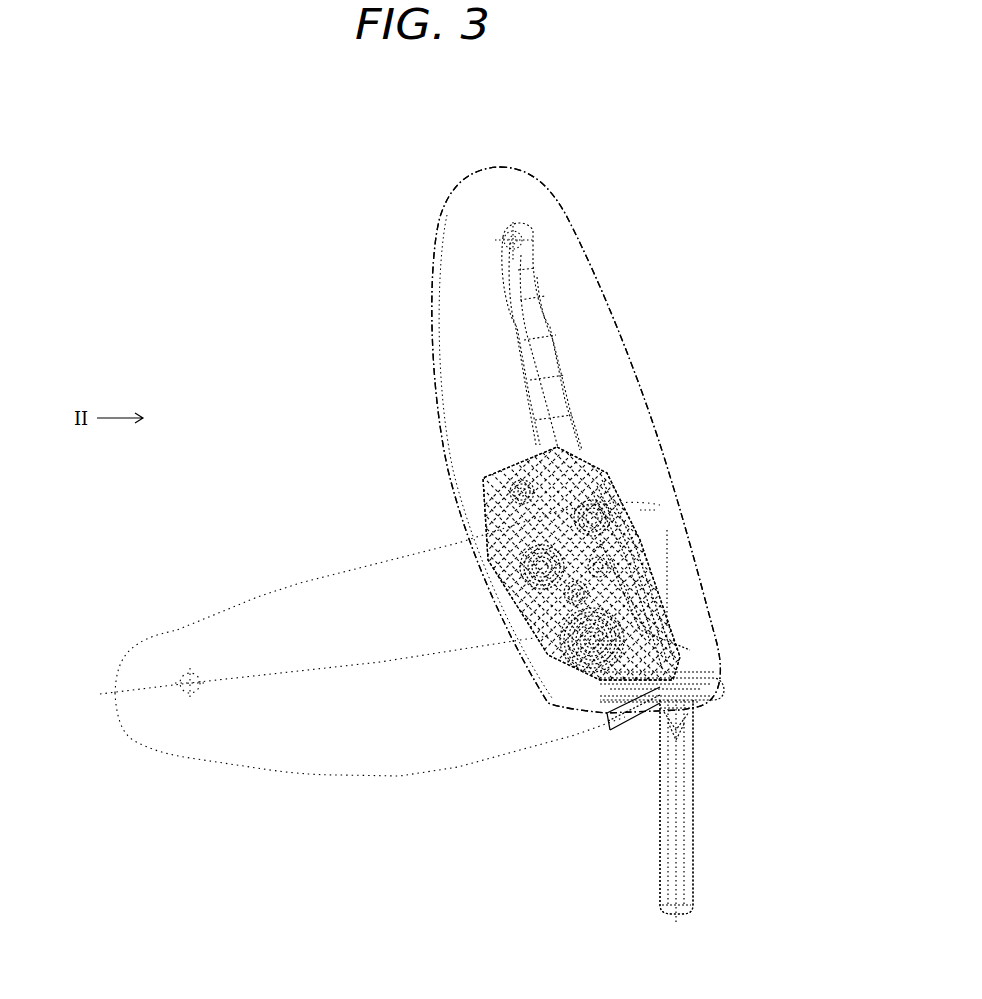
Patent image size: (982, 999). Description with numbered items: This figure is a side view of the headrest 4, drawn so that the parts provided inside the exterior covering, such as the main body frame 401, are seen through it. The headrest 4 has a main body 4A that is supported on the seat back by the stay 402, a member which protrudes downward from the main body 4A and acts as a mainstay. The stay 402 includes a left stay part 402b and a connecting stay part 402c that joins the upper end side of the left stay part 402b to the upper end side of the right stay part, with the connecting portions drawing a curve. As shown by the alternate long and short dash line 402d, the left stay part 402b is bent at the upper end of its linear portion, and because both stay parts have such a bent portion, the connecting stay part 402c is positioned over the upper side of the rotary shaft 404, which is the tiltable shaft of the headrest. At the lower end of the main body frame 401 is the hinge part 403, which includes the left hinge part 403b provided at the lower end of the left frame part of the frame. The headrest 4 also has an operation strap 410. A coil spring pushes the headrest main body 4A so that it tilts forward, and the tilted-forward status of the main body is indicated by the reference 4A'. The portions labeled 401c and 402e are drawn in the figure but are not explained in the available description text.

The headrest 4 is at (571, 166).
The main body 4A is at (576, 440).
The headrest main body tilted forward 4A' is at (380, 639).
The main body frame 401 is at (537, 268).
The arm pivot 401c is at (520, 227).
The hinge part 403 is at (610, 473).
The left hinge part 403b is at (581, 563).
The stay 402 is at (693, 851).
The left stay part 402b is at (676, 807).
The connecting stay part 402c is at (590, 553).
The alternate long and short dash line 402d is at (677, 775).
The bracket end 402e is at (673, 670).
The rotary shaft 404 is at (585, 642).
The operation strap 410 is at (610, 730).